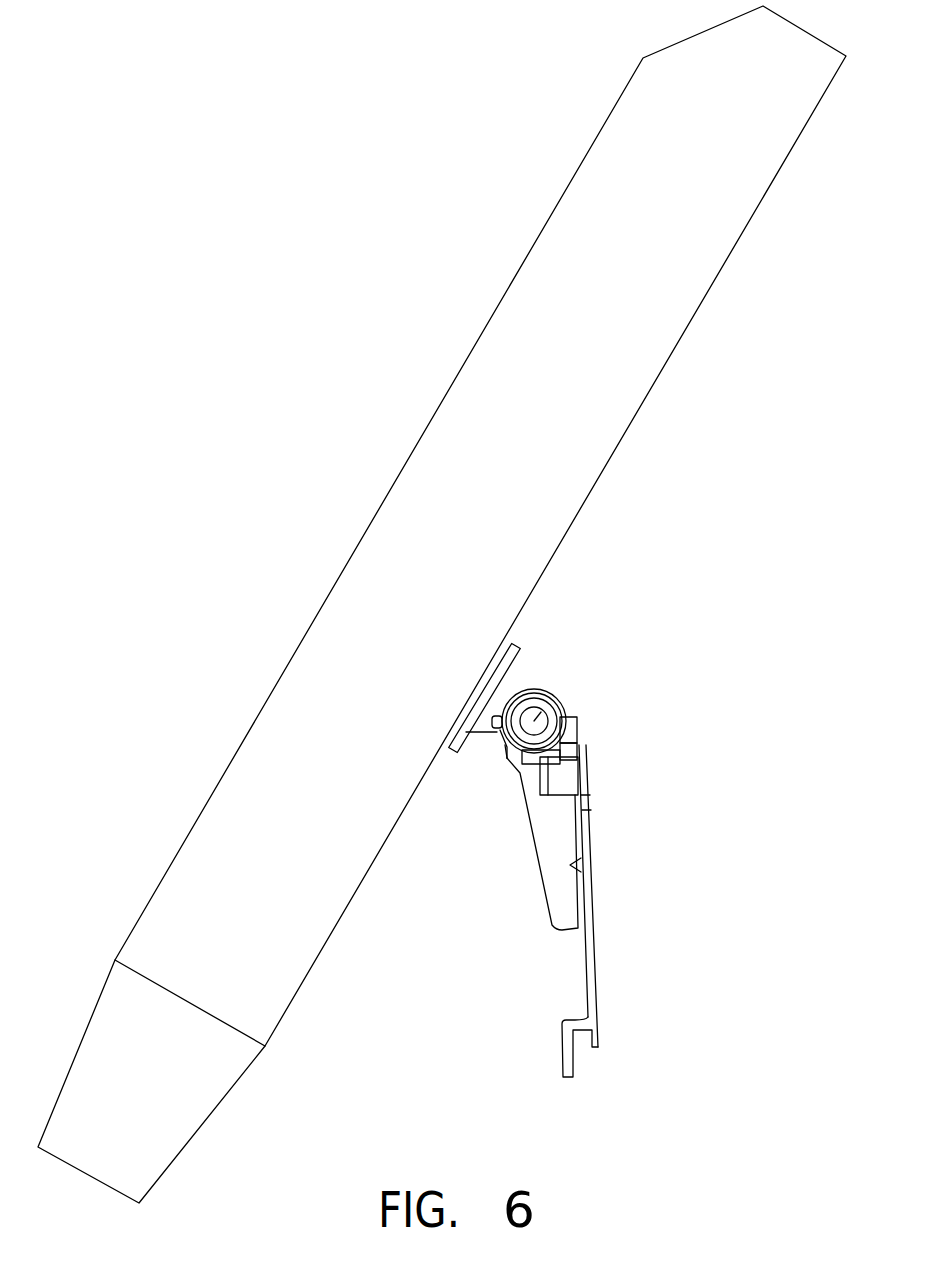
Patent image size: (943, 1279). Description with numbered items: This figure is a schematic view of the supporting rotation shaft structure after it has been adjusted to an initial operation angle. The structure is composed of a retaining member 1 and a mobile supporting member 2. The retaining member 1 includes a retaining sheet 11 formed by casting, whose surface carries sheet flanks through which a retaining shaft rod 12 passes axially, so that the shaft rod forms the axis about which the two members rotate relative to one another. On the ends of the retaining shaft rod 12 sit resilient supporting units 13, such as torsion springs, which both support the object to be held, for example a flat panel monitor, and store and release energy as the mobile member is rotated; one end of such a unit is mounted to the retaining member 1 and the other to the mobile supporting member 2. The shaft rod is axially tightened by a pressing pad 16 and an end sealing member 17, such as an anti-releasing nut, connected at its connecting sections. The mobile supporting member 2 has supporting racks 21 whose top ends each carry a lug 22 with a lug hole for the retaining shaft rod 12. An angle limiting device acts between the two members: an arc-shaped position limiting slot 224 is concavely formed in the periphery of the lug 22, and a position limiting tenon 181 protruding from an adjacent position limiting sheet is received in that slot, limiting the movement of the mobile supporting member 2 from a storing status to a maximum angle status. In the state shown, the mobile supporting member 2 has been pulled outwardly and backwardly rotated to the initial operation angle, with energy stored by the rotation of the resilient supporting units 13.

The retaining member 1 is at (662, 660).
The retaining sheet 11 is at (522, 652).
The retaining shaft rod 12 is at (567, 711).
The resilient supporting unit 13 is at (463, 730).
The pressing pad 16 is at (575, 746).
The end sealing member 17 is at (566, 728).
The position limiting tenon 181 is at (495, 713).
The mobile supporting member 2 is at (670, 833).
The supporting rack 21 is at (592, 862).
The lug 22 is at (505, 755).
The position limiting slot 224 is at (500, 750).